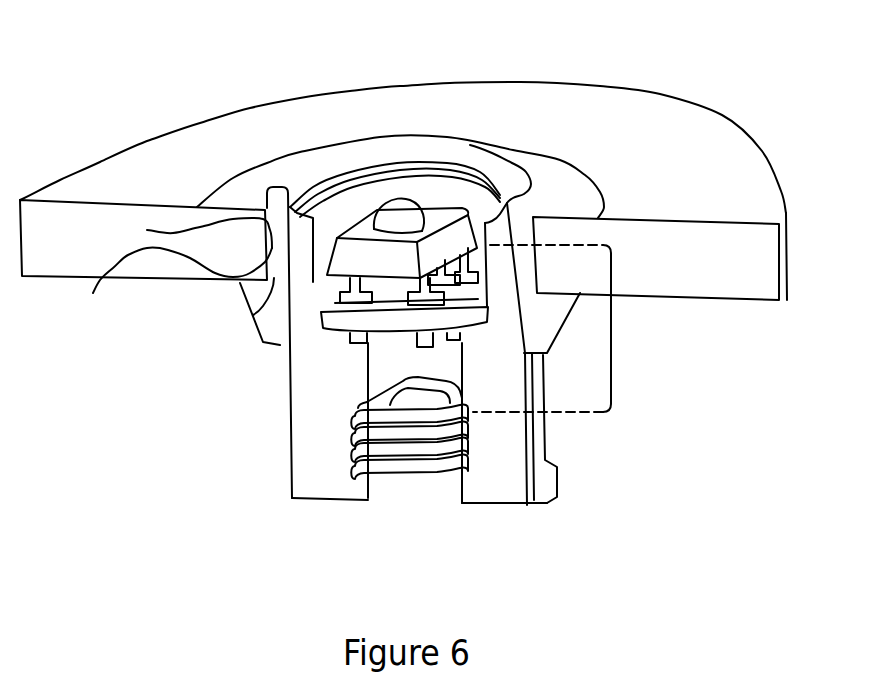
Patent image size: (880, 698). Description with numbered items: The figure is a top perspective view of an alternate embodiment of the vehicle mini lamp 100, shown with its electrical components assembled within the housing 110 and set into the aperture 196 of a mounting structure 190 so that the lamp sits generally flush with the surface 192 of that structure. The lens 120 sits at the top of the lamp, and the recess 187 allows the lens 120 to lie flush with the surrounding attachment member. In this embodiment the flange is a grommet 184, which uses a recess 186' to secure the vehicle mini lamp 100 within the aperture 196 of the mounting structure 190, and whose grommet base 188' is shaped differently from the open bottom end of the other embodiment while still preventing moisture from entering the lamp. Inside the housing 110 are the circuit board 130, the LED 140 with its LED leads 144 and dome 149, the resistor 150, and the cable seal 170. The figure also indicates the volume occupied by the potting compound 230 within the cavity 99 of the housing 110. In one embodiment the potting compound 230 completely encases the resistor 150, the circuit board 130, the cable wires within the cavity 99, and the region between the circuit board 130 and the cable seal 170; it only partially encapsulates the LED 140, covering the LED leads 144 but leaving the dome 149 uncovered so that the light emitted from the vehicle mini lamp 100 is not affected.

The vehicle mini lamp 100 is at (211, 55).
The surface of mounting structure 192 is at (695, 132).
The mounting structure 190 is at (787, 247).
The lens 120 is at (507, 163).
The recess 187 is at (290, 165).
The aperture 196 is at (194, 229).
The recess 186' is at (166, 296).
The grommet 184 is at (257, 303).
The grommet base 188' is at (330, 307).
The LED 140 is at (437, 212).
The dome 149 is at (390, 207).
The LED leads 144 is at (335, 297).
The circuit board 130 is at (332, 322).
The cavity 99 is at (375, 370).
The housing 110 is at (318, 470).
The cable seal 170 is at (400, 472).
The potting compound 230 is at (611, 315).
The resistor 150 is at (440, 350).